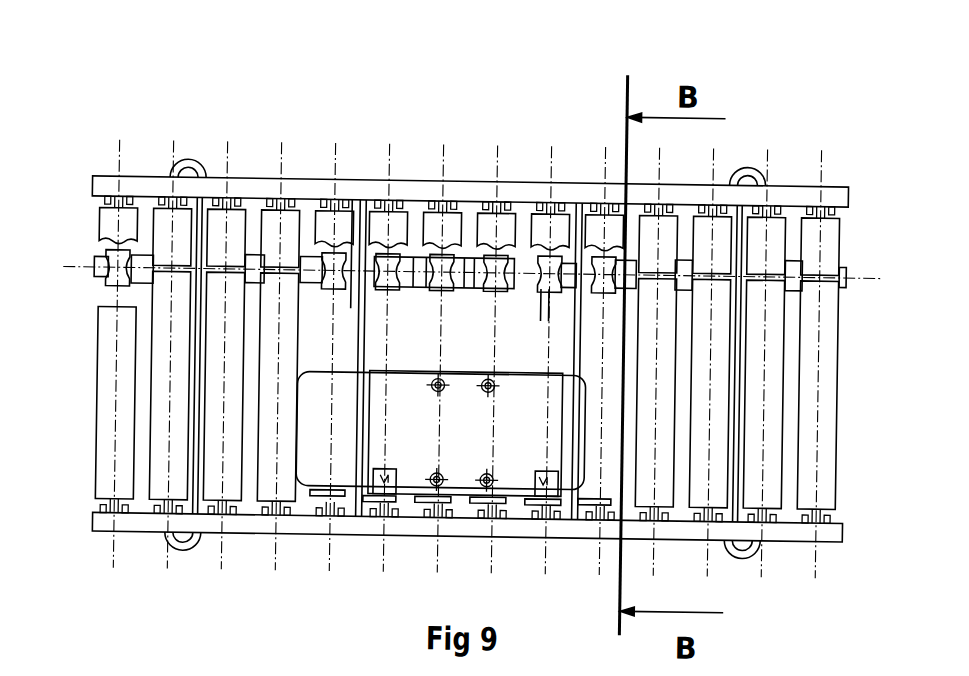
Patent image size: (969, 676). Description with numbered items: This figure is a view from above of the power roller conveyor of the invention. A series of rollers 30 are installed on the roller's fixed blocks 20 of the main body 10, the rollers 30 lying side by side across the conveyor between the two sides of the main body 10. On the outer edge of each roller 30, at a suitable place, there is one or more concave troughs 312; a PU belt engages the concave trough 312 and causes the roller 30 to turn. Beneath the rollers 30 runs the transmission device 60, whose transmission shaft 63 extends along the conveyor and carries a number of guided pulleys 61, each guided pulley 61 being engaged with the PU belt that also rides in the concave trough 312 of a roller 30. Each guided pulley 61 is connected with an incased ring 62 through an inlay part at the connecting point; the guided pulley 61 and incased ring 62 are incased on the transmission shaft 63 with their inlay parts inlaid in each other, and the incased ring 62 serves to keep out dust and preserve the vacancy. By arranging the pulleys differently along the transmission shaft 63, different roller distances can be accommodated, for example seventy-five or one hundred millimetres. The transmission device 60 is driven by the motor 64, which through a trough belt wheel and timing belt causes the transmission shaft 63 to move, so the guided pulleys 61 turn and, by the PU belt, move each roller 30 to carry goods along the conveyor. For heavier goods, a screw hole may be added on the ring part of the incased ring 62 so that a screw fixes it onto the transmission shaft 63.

The main body 10 is at (316, 198).
The roller's fixed block 20 is at (383, 206).
The roller 30 is at (268, 223).
The transmission device 60 is at (512, 466).
The guided pulley 61 is at (109, 288).
The incased ring 62 is at (145, 280).
The transmission shaft 63 is at (97, 266).
The motor 64 is at (319, 472).
The concave trough 312 is at (807, 273).